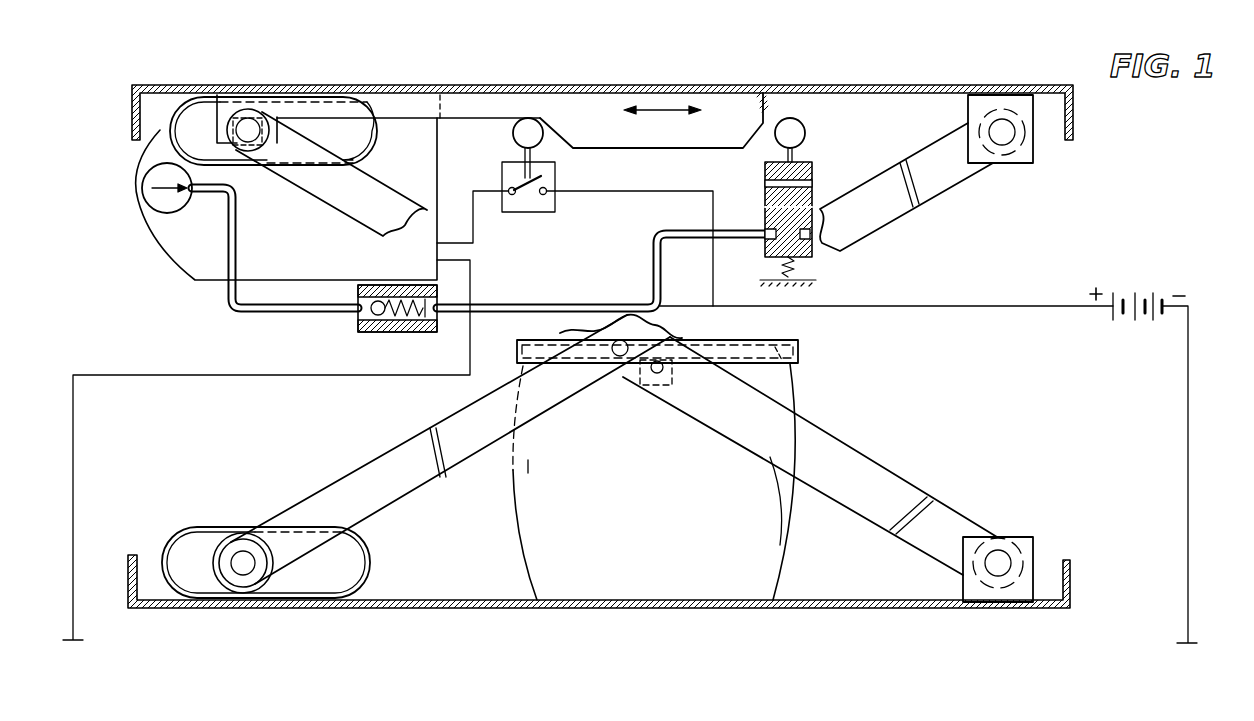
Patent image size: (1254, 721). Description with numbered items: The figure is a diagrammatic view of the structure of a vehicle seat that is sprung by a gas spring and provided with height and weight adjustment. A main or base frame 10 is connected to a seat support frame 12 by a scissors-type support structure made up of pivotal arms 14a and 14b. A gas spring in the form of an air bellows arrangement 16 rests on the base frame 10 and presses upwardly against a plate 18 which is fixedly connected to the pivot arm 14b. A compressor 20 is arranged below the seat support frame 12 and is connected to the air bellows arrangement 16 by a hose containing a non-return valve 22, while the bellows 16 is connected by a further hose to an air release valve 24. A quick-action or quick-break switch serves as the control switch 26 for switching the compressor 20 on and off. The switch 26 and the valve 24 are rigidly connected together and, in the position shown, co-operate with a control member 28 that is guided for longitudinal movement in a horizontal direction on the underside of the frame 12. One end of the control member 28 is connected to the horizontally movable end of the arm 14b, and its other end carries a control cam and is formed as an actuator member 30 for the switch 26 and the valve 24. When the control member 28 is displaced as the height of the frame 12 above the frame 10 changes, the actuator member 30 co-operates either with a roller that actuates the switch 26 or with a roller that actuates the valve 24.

The base frame 10 is at (477, 607).
The seat support frame 12 is at (900, 90).
The pivotal arm 14a is at (937, 182).
The pivotal arm 14b is at (328, 183).
The air bellows arrangement 16 is at (660, 491).
The plate 18 is at (758, 339).
The compressor 20 is at (162, 203).
The non-return valve 22 is at (393, 335).
The air release valve 24 is at (810, 160).
The control switch 26 is at (530, 213).
The control member 28 is at (465, 107).
The actuator member 30 is at (632, 140).